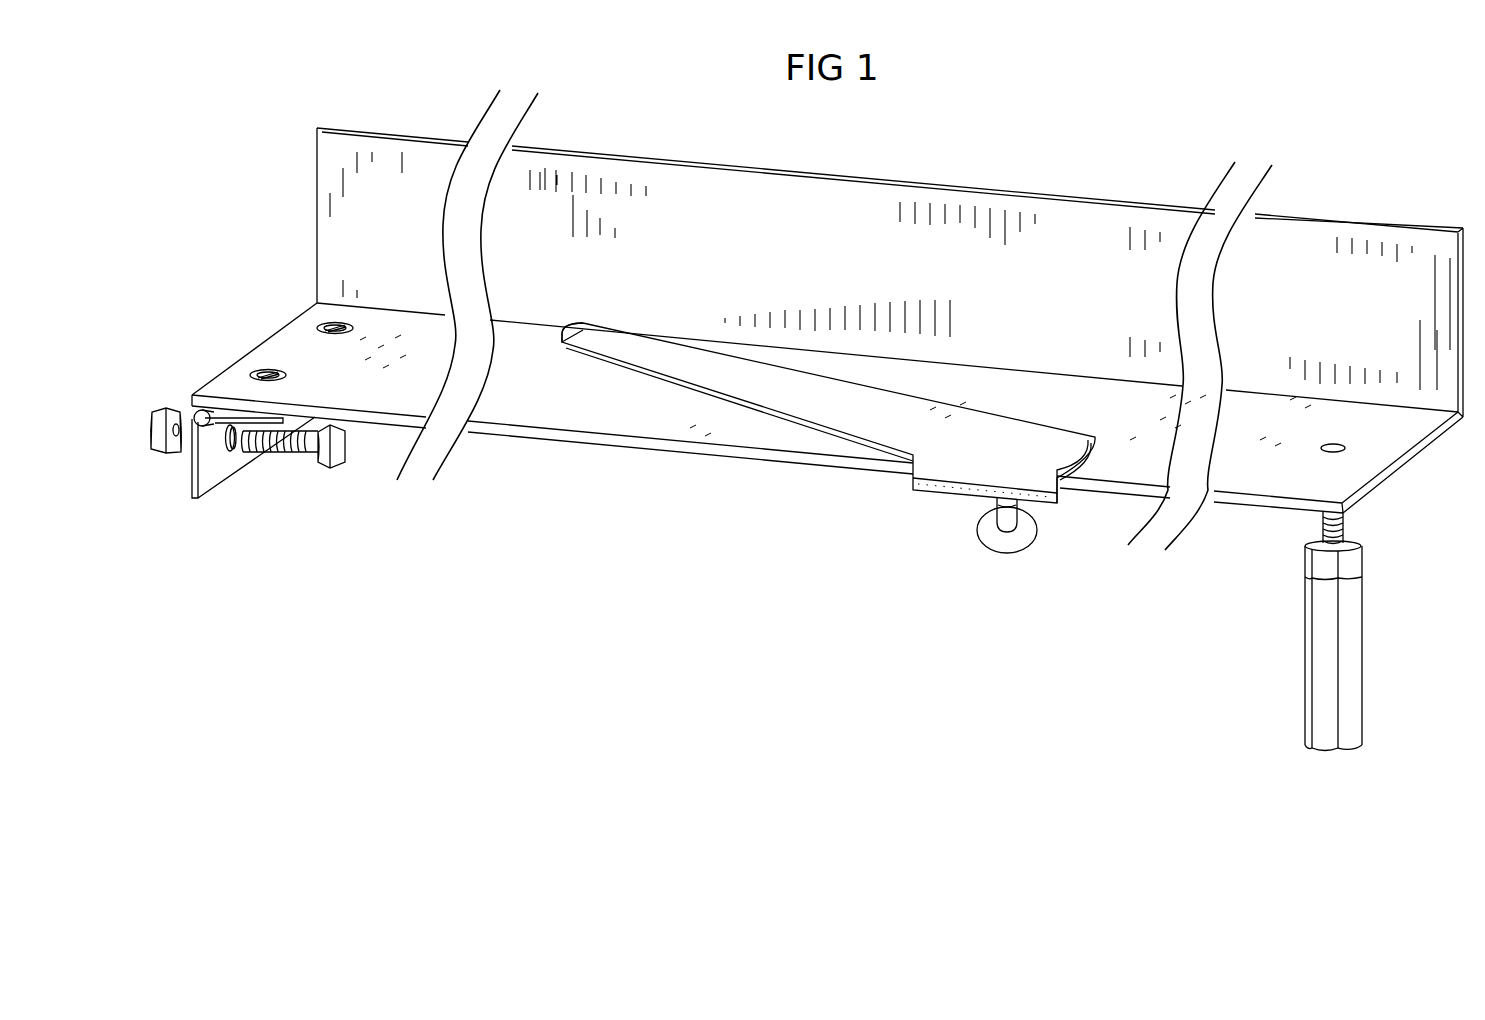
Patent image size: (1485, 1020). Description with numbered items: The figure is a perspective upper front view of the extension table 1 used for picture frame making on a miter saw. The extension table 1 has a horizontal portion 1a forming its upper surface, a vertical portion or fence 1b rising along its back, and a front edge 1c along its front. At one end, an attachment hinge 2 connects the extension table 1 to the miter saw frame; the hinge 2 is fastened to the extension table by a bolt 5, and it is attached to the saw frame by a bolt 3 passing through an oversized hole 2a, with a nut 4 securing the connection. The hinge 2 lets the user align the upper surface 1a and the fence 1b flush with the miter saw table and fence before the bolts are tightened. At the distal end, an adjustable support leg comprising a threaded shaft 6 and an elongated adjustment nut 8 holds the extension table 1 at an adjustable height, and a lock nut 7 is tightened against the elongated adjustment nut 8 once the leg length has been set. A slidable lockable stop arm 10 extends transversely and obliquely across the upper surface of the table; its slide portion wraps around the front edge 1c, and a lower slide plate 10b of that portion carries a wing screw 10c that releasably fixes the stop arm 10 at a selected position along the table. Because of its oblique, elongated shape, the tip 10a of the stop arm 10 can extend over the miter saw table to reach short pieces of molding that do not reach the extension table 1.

The extension table 1 is at (827, 320).
The horizontal portion of extension table 1a is at (827, 408).
The vertical portion or fence of extension table 1b is at (797, 259).
The front edge of extension table 1c is at (683, 452).
The attachment hinge 2 is at (234, 467).
The oversized hole for bolt 2a is at (232, 452).
The bolt for attaching hinge to miter saw frame 3 is at (297, 455).
The nut 4 is at (168, 406).
The bolt for attaching hinge to extension table 5 is at (287, 371).
The threaded shaft of adjustable support leg 6 is at (1347, 525).
The lock nut 7 is at (1358, 558).
The elongated adjustment nut of support leg 8 is at (1357, 632).
The slidable lockable stop arm 10 is at (827, 424).
The tip of stop arm 10a is at (573, 322).
The lower slide plate of stop arm 10b is at (1067, 492).
The wing screw 10c is at (982, 532).